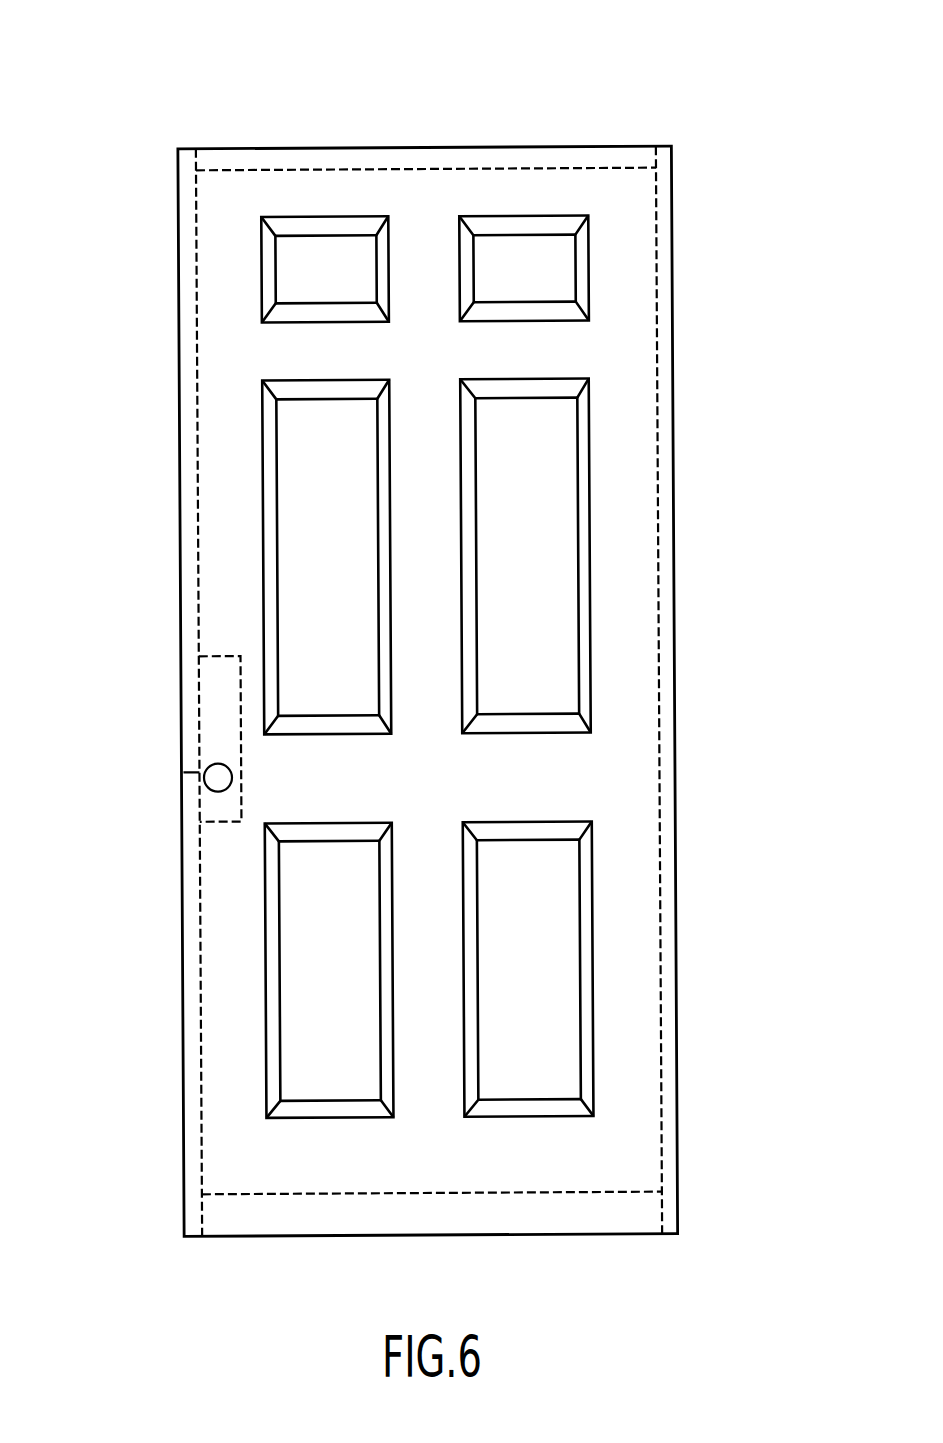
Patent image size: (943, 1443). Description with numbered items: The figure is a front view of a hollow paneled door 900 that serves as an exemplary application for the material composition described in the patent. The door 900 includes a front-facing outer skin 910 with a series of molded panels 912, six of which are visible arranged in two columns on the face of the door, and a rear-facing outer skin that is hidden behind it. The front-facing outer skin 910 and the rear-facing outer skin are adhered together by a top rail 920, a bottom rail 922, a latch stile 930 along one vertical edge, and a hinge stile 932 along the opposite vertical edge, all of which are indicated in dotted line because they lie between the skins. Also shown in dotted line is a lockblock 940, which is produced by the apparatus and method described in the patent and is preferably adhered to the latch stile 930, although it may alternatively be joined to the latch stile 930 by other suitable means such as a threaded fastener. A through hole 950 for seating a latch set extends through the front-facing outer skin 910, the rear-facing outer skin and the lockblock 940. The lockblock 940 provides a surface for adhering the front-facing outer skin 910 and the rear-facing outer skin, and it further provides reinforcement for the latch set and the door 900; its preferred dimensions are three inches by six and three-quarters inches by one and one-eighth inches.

The hollow paneled door 900 is at (440, 683).
The front-facing outer skin 910 is at (633, 230).
The molded panels 912 is at (332, 285).
The top rail 920 is at (441, 158).
The bottom rail 922 is at (551, 1215).
The latch stile 930 is at (187, 382).
The hinge stile 932 is at (665, 753).
The lockblock 940 is at (215, 707).
The through hole 950 is at (215, 780).